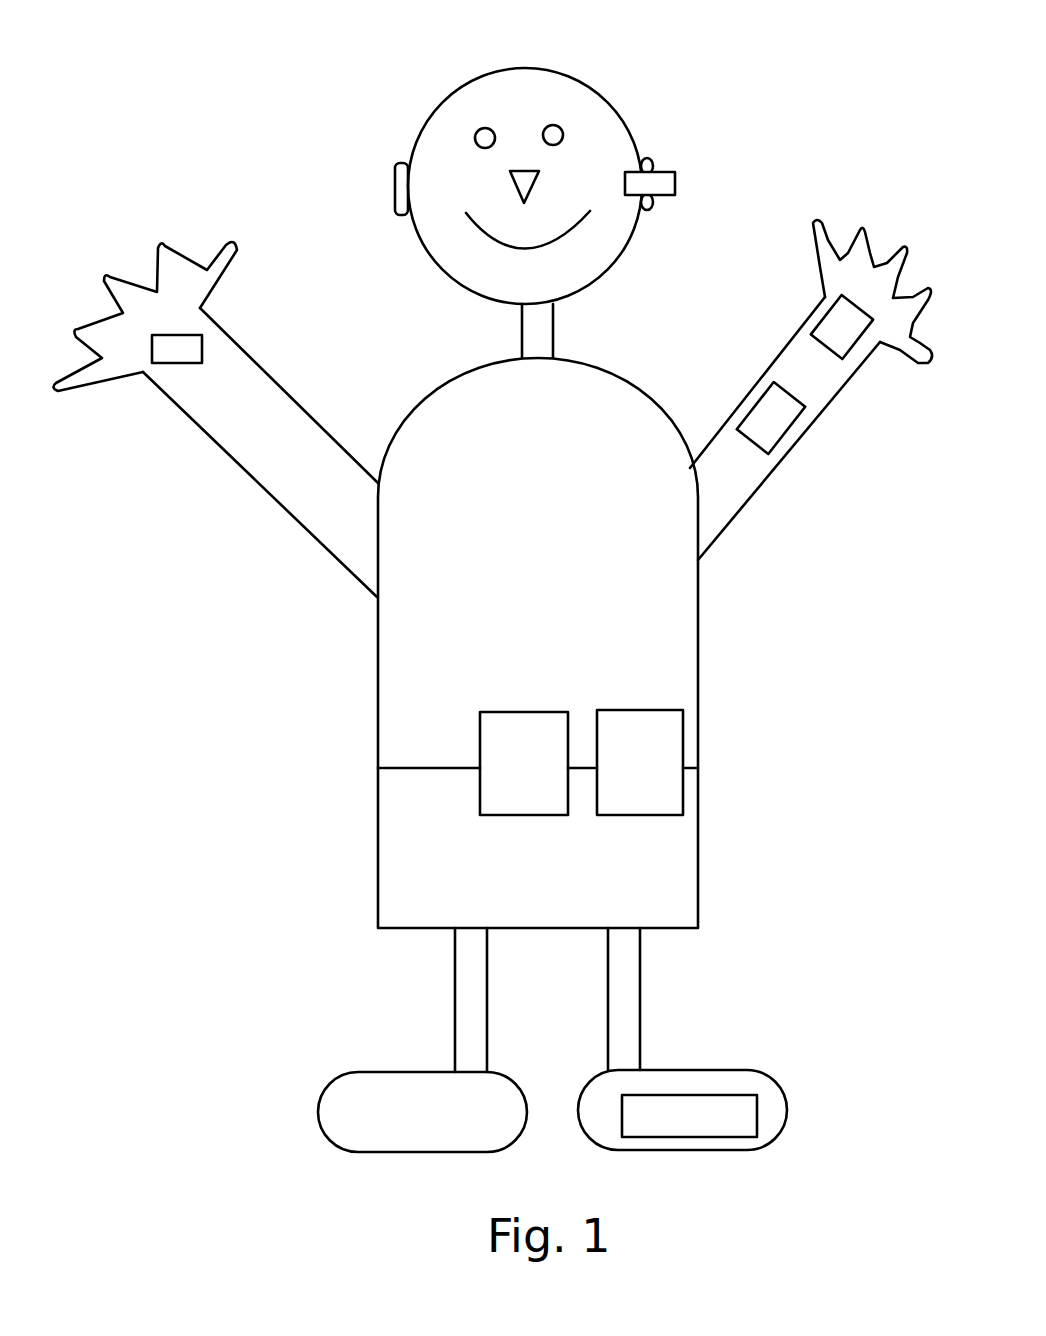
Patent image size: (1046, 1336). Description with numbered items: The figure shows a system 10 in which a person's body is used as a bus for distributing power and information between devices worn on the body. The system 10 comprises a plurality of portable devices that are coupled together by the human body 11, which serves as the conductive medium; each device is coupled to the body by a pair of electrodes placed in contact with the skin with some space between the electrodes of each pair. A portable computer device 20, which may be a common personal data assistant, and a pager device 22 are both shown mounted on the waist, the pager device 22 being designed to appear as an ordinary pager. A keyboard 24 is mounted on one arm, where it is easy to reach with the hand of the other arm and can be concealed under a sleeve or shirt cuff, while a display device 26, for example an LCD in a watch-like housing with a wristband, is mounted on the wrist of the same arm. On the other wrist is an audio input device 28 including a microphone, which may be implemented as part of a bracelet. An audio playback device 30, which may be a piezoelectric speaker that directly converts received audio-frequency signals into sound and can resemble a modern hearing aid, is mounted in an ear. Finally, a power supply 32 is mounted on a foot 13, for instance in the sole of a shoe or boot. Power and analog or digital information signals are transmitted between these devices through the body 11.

The system 10 is at (648, 26).
The human body 11 is at (420, 412).
The foot 13 is at (722, 1072).
The portable computer device 20 is at (640, 762).
The pager device 22 is at (524, 763).
The keyboard 24 is at (771, 418).
The display device 26 is at (842, 327).
The audio input device 28 is at (177, 349).
The audio playback device 30 is at (650, 184).
The power supply 32 is at (689, 1116).